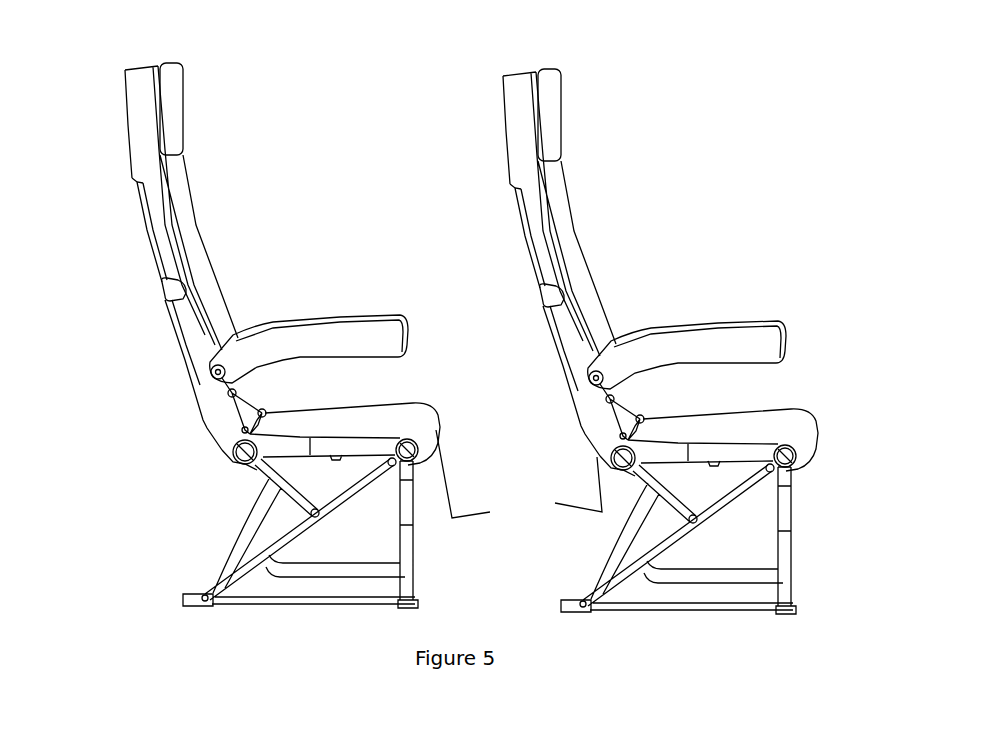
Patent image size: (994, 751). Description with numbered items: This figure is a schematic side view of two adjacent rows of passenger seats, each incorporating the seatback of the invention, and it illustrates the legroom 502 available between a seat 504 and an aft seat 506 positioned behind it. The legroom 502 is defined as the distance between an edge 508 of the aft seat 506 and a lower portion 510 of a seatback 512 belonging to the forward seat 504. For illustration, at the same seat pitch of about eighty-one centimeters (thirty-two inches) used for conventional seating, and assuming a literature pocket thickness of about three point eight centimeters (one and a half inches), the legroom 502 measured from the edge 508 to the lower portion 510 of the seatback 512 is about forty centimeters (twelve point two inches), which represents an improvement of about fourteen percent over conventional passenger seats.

The legroom 502 is at (519, 475).
The seat 504 is at (537, 96).
The aft seat 506 is at (160, 90).
The edge 508 is at (438, 413).
The lower portion 510 is at (580, 378).
The seatback 512 is at (500, 182).